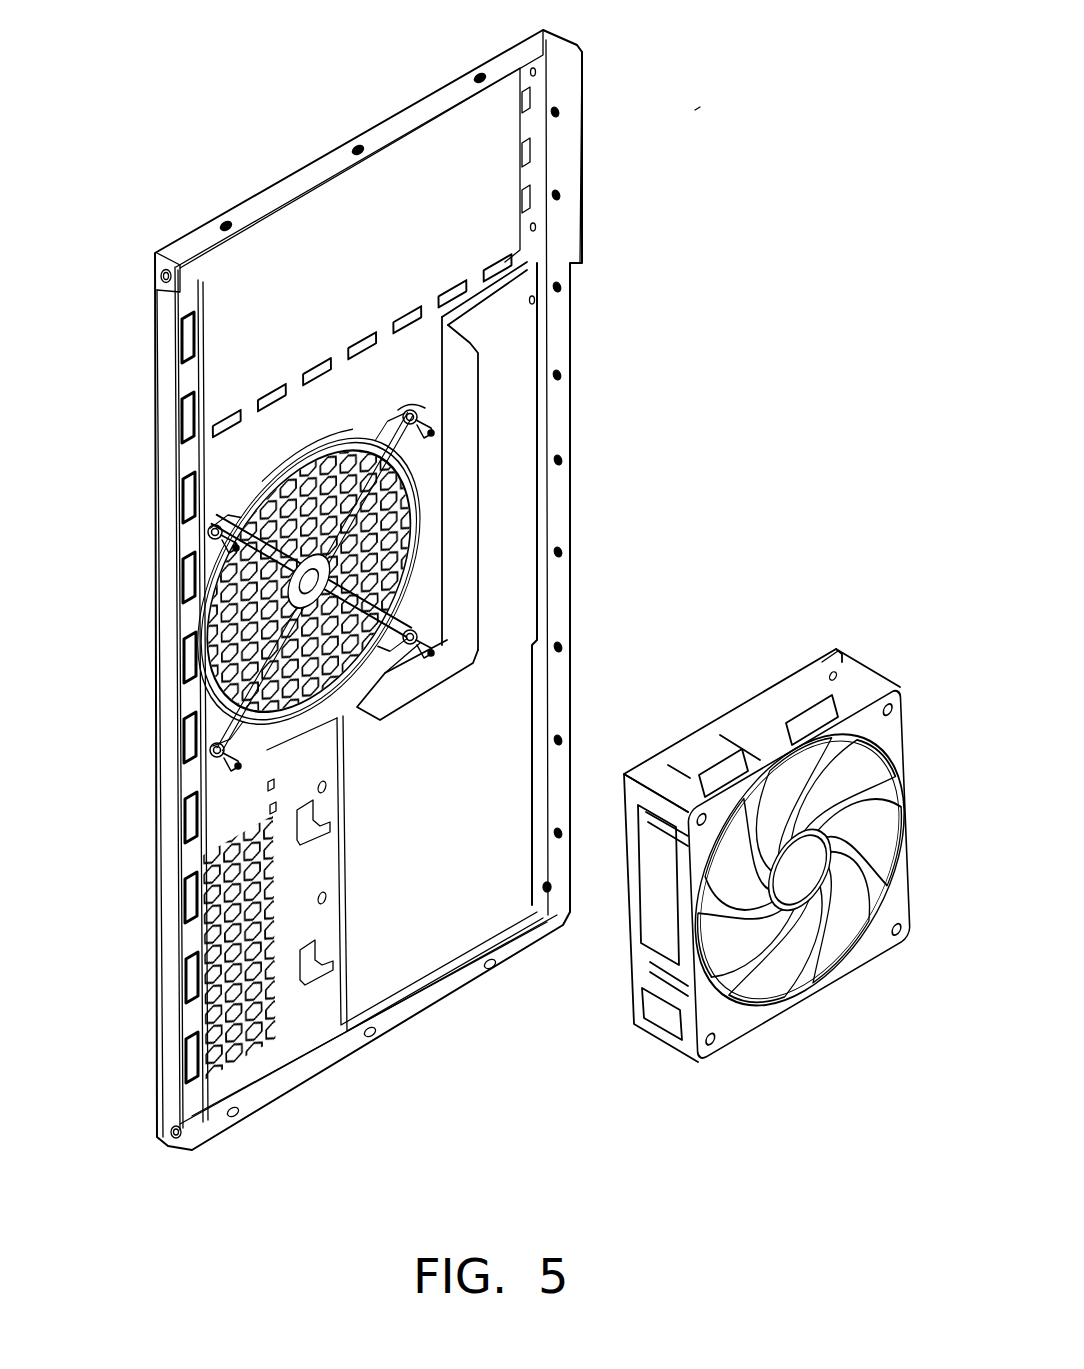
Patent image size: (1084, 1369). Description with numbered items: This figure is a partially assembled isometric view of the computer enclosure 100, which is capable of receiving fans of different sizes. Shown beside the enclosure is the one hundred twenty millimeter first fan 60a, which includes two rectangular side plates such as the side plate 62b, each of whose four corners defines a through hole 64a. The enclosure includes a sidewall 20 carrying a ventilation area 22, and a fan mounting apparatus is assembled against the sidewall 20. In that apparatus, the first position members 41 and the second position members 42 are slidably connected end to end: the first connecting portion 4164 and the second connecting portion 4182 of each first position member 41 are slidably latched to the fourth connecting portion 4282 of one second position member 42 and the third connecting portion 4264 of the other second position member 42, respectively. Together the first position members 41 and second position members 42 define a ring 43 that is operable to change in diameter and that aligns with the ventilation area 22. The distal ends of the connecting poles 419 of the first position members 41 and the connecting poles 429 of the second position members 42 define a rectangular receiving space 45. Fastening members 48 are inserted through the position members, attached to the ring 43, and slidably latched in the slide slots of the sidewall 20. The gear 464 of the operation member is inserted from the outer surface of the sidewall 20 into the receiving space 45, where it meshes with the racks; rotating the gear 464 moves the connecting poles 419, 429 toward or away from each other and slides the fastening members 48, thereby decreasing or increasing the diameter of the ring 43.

The computer enclosure 100 is at (695, 110).
The sidewall 20 is at (525, 532).
The ventilation area 22 is at (245, 503).
The first position member 41 is at (425, 462).
The second position member 42 is at (430, 657).
The ring 43 is at (365, 676).
The receiving space 45 is at (222, 600).
The fastening member 48 is at (418, 425).
The connecting pole 419 is at (500, 530).
The connecting pole 429 is at (422, 582).
The gear 464 is at (215, 548).
The first connecting portion 4164 is at (317, 440).
The second connecting portion 4182 is at (423, 500).
The third connecting portion 4264 is at (415, 553).
The fourth connecting portion 4282 is at (290, 458).
The first fan 60a is at (752, 725).
The side plate 62b is at (823, 660).
The through hole 64a is at (843, 672).